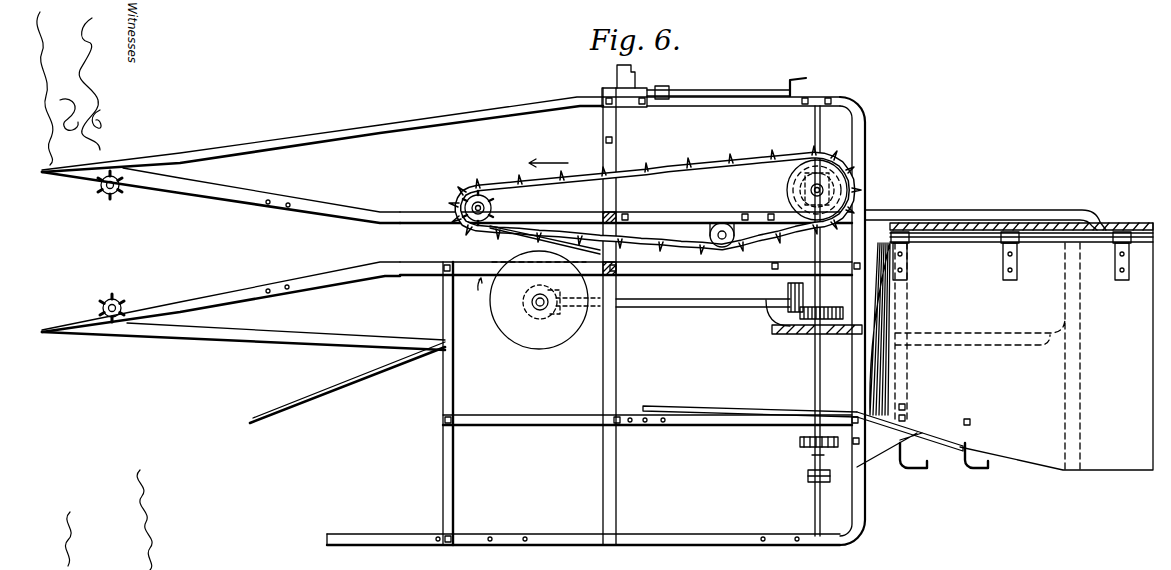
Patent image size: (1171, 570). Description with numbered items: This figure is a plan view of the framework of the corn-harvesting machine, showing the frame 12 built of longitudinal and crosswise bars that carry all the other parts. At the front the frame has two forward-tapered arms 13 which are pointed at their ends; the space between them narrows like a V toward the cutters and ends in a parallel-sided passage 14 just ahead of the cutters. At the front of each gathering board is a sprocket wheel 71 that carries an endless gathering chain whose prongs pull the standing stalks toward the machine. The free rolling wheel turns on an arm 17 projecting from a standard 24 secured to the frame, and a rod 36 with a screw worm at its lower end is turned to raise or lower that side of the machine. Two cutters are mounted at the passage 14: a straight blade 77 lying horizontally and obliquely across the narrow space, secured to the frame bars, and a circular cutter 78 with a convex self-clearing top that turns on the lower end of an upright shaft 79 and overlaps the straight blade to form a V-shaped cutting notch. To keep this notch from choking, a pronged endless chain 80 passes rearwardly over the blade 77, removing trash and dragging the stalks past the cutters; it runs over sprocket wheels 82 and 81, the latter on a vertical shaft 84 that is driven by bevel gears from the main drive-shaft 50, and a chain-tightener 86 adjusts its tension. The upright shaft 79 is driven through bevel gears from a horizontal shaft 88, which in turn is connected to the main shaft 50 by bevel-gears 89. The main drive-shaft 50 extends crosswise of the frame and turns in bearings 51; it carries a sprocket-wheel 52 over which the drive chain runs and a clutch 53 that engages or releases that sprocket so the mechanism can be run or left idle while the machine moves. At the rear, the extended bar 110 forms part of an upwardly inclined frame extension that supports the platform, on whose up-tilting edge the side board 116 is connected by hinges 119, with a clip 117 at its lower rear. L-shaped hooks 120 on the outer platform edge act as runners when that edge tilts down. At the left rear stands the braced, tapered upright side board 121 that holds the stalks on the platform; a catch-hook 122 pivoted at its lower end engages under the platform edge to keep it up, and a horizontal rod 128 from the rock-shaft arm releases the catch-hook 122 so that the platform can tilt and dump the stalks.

The frame 12 is at (697, 104).
The forward-tapered arms 13 is at (228, 146).
The parallel-sided passage 14 is at (626, 206).
The arm 17 is at (617, 76).
The standard 24 is at (641, 90).
The rod 36 is at (726, 86).
The main drive-shaft 50 is at (815, 503).
The bearings 51 is at (827, 97).
The sprocket-wheel 52 is at (800, 441).
The clutch 53 is at (808, 473).
The sprocket wheel 71 is at (119, 197).
The straight blade 77 is at (556, 232).
The circular cutter 78 is at (532, 350).
The upright shaft 79 is at (536, 301).
The endless chain 80 is at (737, 158).
The sprocket wheel 81 is at (796, 190).
The sprocket wheel 82 is at (466, 195).
The vertical shaft 84 is at (838, 186).
The chain-tightener 86 is at (721, 222).
The horizontal shaft 88 is at (674, 307).
The bevel-gears 89 is at (785, 328).
The extended bar 110 is at (978, 210).
The side board 116 is at (1100, 222).
The clip 117 is at (1011, 346).
The hinges 119 is at (1003, 242).
The L-shaped hooks 120 is at (913, 470).
The upright side board 121 is at (935, 428).
The catch-hook 122 is at (963, 452).
The rod 128 is at (710, 405).